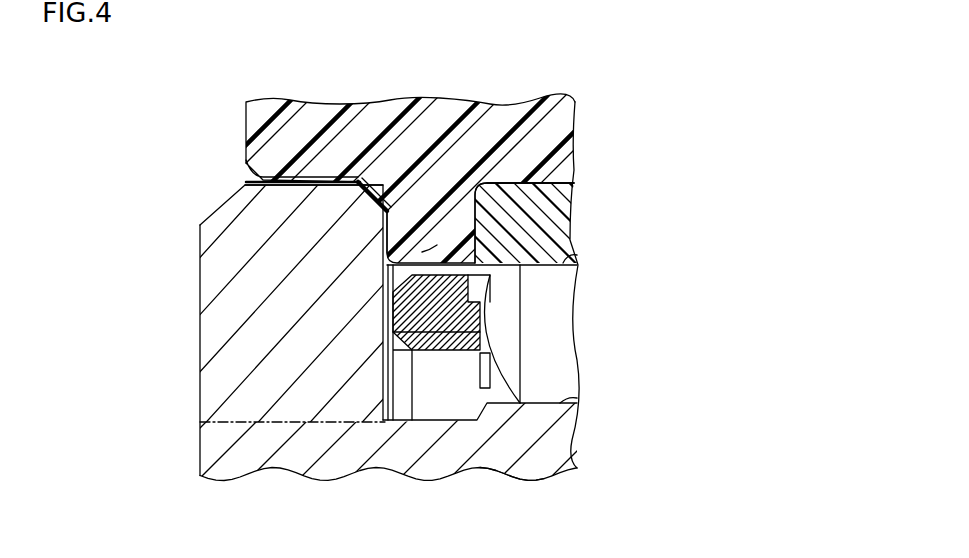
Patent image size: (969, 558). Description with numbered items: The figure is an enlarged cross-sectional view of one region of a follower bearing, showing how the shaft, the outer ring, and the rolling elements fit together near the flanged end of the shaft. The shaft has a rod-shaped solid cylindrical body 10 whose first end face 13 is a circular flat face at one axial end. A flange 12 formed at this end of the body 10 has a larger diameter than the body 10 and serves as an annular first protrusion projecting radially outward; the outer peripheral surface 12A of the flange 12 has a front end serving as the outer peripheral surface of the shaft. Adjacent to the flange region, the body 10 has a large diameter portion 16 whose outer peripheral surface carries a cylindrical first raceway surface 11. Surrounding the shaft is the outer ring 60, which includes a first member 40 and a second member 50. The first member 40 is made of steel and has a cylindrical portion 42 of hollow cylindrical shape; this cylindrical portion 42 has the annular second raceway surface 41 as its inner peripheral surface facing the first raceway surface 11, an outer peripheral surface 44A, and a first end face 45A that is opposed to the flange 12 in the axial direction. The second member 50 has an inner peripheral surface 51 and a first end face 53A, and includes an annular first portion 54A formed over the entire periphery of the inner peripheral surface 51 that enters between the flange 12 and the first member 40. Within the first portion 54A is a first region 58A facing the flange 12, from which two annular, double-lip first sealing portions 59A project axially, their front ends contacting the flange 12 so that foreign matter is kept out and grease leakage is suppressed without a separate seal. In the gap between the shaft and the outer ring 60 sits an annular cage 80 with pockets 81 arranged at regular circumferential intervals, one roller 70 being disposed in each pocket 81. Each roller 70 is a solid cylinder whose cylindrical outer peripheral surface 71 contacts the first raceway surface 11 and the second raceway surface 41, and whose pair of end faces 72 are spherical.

The body 10 is at (560, 450).
The first raceway surface 11 is at (575, 385).
The flange 12 is at (260, 382).
The outer peripheral surface of the flange 12A is at (254, 181).
The first end face 13 is at (200, 455).
The large diameter portion 16 is at (527, 442).
The first member 40 is at (462, 181).
The second raceway surface 41 is at (548, 268).
The cylindrical portion 42 is at (508, 212).
The outer peripheral surface 44A is at (547, 174).
The first end face 45A is at (470, 222).
The second member 50 is at (424, 119).
The inner peripheral surface 51 is at (573, 195).
The first end face 53A is at (245, 131).
The first portion 54A is at (387, 275).
The first region 58A is at (387, 233).
The first sealing portions 59A is at (385, 250).
The outer ring 60 is at (403, 58).
The roller 70 is at (553, 350).
The outer peripheral surface 71 is at (563, 262).
The end faces 72 is at (393, 335).
The cage 80 is at (430, 325).
The pockets 81 is at (487, 322).